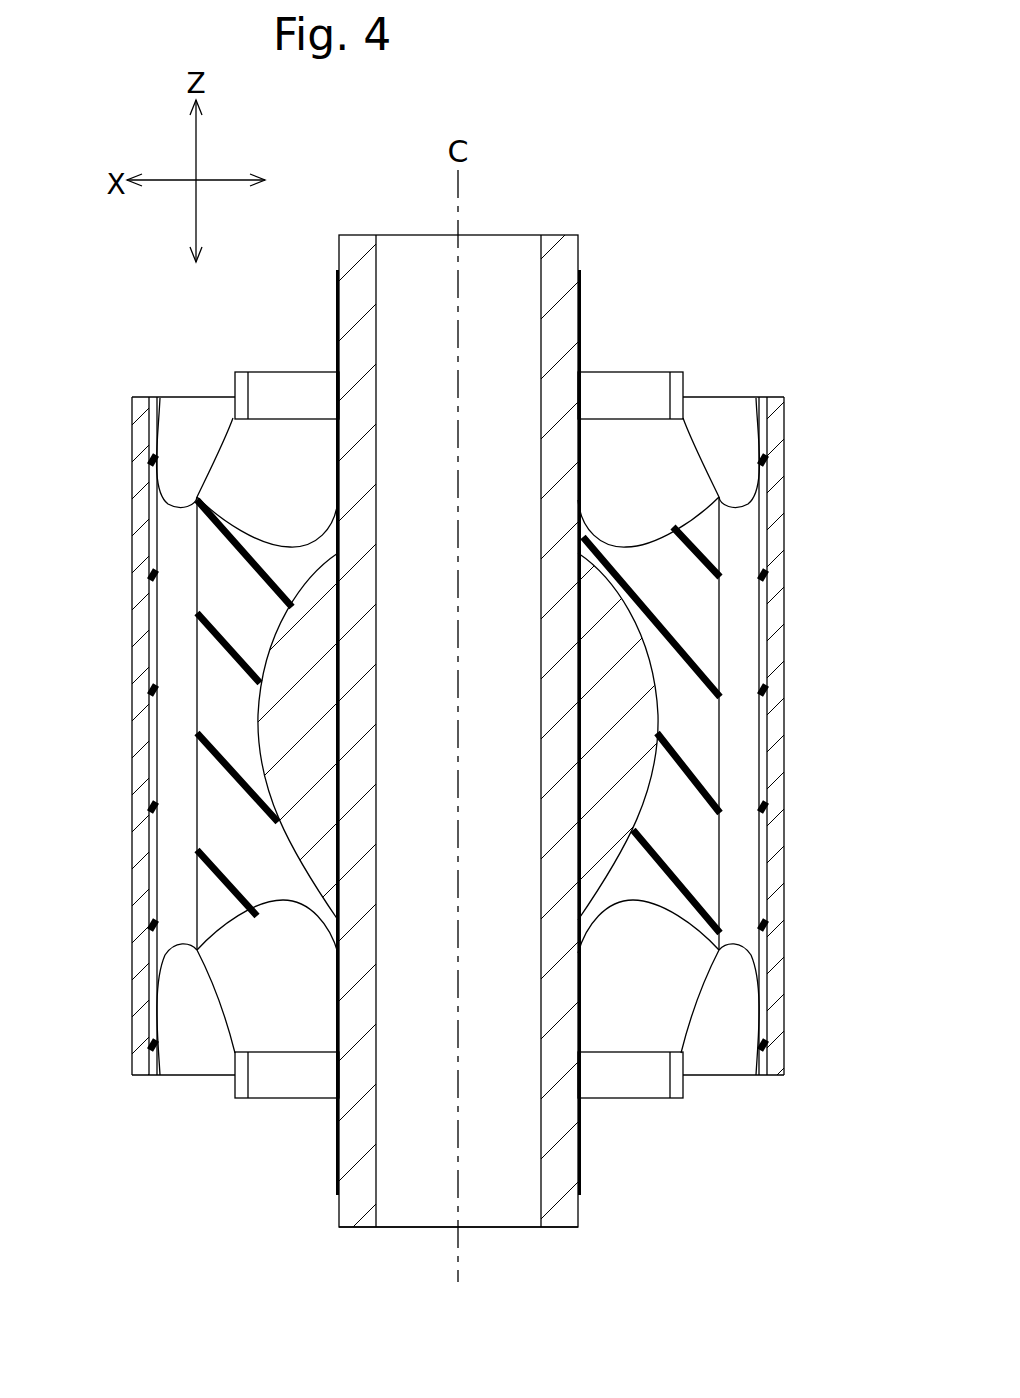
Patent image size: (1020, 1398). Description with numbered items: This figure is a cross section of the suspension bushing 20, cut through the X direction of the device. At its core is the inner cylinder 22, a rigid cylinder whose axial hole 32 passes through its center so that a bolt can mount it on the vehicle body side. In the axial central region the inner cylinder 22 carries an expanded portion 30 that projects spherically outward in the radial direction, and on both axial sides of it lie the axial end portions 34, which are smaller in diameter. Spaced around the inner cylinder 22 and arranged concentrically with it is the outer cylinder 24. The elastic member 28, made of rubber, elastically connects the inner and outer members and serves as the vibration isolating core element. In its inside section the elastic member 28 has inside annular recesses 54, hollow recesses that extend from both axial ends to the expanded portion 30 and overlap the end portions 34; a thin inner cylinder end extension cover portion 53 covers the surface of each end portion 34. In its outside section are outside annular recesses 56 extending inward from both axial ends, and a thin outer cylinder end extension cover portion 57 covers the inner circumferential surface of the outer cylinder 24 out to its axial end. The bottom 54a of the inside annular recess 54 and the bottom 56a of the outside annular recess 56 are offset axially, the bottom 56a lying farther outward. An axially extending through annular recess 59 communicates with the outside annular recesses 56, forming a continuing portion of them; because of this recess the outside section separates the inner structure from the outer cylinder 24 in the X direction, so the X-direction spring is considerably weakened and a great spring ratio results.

The suspension bushing 20 is at (811, 398).
The inner cylinder 22 is at (510, 789).
The outer cylinder 24 is at (795, 965).
The elastic member 28 is at (720, 720).
The expanded portion 30 is at (262, 718).
The axial hole 32 is at (425, 1197).
The axial end portion 34 is at (356, 272).
The inner cylinder end extension cover portion 53 is at (336, 332).
The inside annular recess 54 is at (297, 523).
The bottom of the inside annular recess 54a is at (307, 548).
The outside annular recess 56 is at (182, 480).
The bottom of the outside annular recess 56a is at (165, 505).
The outer cylinder end extension cover portion 57 is at (155, 450).
The annular recess 59 is at (178, 655).